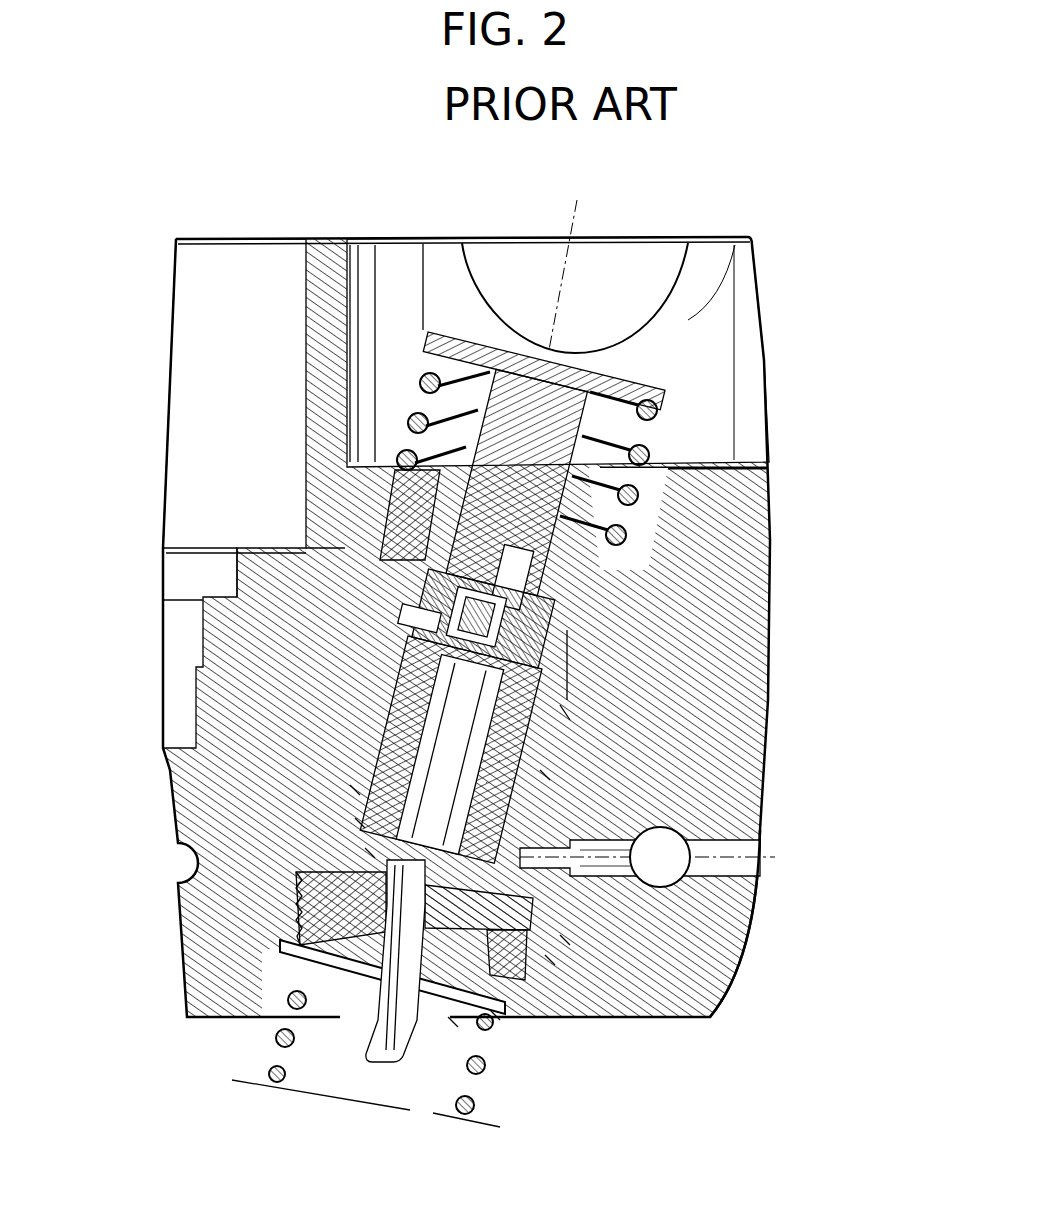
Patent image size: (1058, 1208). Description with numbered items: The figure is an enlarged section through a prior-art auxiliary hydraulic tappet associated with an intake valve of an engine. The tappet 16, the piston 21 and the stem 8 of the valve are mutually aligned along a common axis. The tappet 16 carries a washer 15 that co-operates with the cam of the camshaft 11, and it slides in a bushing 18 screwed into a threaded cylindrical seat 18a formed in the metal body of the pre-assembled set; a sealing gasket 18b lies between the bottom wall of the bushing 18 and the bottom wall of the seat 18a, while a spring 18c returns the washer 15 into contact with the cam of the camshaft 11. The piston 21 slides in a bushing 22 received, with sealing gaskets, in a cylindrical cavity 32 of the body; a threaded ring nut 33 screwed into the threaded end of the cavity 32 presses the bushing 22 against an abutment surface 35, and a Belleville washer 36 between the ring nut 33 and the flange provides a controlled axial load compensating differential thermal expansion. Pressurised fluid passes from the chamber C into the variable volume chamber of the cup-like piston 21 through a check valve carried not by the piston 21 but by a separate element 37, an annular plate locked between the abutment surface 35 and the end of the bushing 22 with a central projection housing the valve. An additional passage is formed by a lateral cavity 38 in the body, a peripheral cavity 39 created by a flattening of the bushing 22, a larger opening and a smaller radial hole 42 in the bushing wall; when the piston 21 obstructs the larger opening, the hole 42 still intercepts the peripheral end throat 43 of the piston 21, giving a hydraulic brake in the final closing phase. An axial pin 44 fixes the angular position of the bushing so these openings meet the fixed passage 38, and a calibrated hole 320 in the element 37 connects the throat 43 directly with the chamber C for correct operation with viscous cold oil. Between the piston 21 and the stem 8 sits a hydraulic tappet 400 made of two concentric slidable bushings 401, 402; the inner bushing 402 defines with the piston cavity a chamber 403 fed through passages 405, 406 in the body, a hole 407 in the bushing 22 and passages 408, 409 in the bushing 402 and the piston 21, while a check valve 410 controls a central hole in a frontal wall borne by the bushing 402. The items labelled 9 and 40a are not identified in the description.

The valve stem 8 is at (363, 1062).
The spring coil 9 is at (276, 1042).
The camshaft 11 is at (667, 318).
The washer 15 is at (623, 372).
The tappet 16 is at (460, 340).
The bushing 18 is at (747, 467).
The threaded cylindrical seat 18a is at (307, 495).
The sealing gasket 18b is at (600, 650).
The spring 18c is at (383, 238).
The piston 21 is at (520, 785).
The bushing 22 is at (340, 820).
The cylindrical cavity 32 is at (300, 800).
The threaded ring nut 33 is at (548, 960).
The abutment surface 35 is at (563, 683).
The Belleville washer 36 is at (565, 940).
The annular plate element 37 is at (385, 636).
The lateral cavity 38 is at (307, 600).
The peripheral cavity 39 is at (203, 600).
The thread 40a is at (360, 790).
The hole 42 is at (360, 660).
The peripheral end throat 43 is at (360, 750).
The axial pin 44 is at (575, 690).
The calibrated hole 320 is at (545, 770).
The hydraulic tappet 400 is at (290, 958).
The outer bushing 401 is at (455, 1018).
The inner bushing 402 is at (390, 867).
The chamber 403 is at (760, 822).
The passage 405 is at (757, 900).
The passage 406 is at (370, 852).
The hole 407 is at (492, 1015).
The passage 408 is at (360, 822).
The passage 409 is at (767, 865).
The check valve 410 is at (355, 905).
The chamber C is at (560, 606).